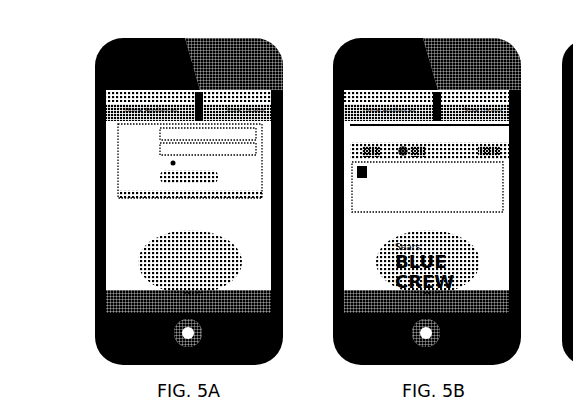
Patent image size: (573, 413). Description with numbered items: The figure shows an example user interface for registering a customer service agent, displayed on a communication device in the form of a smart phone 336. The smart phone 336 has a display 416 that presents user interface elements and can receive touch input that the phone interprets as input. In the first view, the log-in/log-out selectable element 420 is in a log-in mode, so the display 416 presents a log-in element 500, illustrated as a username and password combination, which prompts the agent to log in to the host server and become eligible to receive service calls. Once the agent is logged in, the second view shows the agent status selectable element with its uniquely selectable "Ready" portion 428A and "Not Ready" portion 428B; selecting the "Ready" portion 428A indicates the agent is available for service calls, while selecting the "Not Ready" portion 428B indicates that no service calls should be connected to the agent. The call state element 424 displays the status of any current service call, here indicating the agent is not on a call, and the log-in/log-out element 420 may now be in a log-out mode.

In FIG. 5A, the smart phone 336 is at (226, 43).
In FIG. 5B, the smart phone 336 is at (447, 43).
In FIG. 5A, the log-in element 500 is at (125, 176).
In FIG. 5A, the display 416 is at (118, 252).
In FIG. 5B, the log-in/log-out selectable element 420 is at (482, 146).
In FIG. 5B, the "Ready" portion 428A is at (366, 152).
In FIG. 5B, the "Not Ready" portion 428B is at (418, 152).
In FIG. 5B, the call state element 424 is at (492, 202).